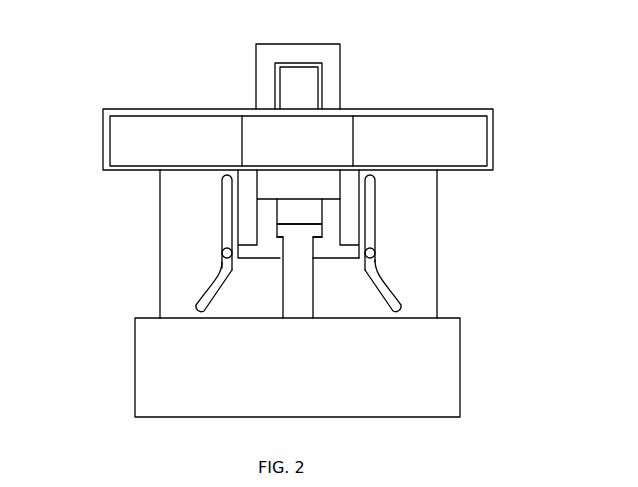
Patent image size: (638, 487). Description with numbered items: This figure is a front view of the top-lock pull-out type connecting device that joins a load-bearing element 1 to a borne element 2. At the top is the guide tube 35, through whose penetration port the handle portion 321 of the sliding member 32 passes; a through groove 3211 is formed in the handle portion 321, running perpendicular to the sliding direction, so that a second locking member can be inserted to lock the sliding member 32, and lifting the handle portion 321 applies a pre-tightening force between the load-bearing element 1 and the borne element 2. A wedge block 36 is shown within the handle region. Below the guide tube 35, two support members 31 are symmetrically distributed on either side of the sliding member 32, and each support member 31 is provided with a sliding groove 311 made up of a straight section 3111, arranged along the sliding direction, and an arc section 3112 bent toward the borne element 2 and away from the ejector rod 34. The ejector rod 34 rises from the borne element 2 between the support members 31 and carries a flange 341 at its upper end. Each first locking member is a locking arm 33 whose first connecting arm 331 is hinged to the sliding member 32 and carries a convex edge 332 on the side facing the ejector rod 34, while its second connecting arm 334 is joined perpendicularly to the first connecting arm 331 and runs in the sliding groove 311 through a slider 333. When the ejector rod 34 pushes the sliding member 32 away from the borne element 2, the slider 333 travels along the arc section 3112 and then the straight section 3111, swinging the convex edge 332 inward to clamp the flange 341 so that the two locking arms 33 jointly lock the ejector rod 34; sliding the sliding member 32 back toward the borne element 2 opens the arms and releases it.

The load-bearing element 1 is at (448, 112).
The borne element 2 is at (452, 353).
The support member 31 is at (177, 233).
The sliding groove 311 is at (90, 265).
The straight section 3111 is at (226, 214).
The arc section 3112 is at (203, 299).
The sliding member 32 is at (277, 188).
The handle portion 321 is at (310, 55).
The through groove 3211 is at (397, 72).
The locking arm 33 is at (500, 188).
The first connecting arm 331 is at (330, 225).
The convex edge 332 is at (315, 245).
The slider 333 is at (375, 250).
The second connecting arm 334 is at (375, 257).
The ejector rod 34 is at (300, 297).
The flange 341 is at (318, 233).
The guide tube 35 is at (255, 143).
The wedge block 36 is at (288, 85).